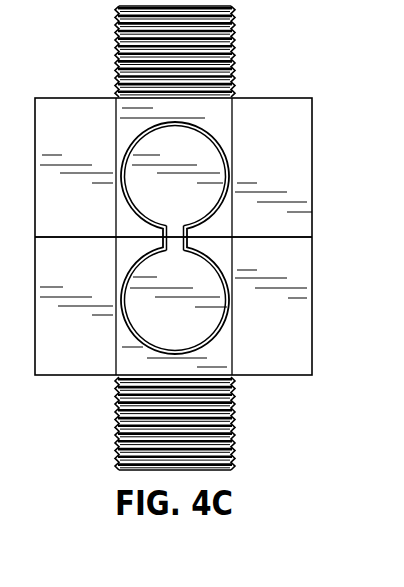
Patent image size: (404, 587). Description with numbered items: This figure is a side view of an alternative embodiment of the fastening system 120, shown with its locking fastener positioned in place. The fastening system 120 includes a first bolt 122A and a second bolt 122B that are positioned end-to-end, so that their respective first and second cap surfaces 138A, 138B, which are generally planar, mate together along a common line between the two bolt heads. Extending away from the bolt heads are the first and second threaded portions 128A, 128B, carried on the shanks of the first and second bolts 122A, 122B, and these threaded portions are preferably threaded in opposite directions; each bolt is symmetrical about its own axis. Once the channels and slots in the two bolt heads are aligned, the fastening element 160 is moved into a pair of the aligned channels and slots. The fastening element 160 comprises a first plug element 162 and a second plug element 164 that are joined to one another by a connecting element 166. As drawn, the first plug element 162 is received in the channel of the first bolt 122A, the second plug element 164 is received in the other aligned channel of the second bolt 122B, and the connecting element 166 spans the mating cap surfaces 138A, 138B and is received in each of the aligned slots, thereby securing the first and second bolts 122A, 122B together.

The fastening system 120 is at (273, 45).
The first bolt 122A is at (317, 145).
The second bolt 122B is at (314, 296).
The first threaded portion 128A is at (118, 48).
The second threaded portion 128B is at (130, 427).
The first cap surface 138A is at (97, 236).
The second cap surface 138B is at (83, 240).
The fastening element 160 is at (200, 142).
The first plug element 162 is at (208, 158).
The second plug element 164 is at (207, 318).
The connecting element 166 is at (187, 233).